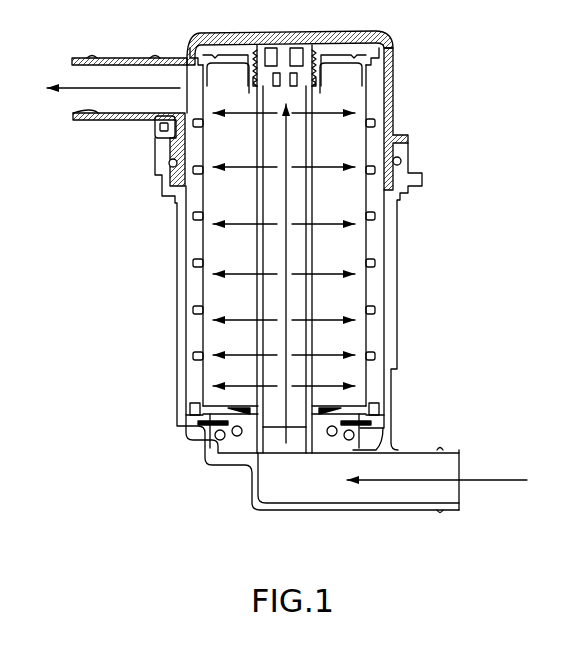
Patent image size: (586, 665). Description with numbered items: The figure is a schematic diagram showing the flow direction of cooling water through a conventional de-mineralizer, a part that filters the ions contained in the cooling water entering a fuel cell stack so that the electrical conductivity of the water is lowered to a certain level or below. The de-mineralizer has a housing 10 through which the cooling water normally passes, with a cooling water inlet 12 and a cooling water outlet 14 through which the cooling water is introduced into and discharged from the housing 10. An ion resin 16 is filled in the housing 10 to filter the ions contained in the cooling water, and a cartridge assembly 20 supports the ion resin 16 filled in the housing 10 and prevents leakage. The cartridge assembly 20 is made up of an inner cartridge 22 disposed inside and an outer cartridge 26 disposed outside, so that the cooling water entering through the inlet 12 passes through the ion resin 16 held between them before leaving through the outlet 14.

The housing 10 is at (389, 345).
The cooling water inlet 12 is at (461, 458).
The cooling water outlet 14 is at (75, 113).
The ion resin 16 is at (275, 307).
The cartridge assembly 20 is at (349, 249).
The inner cartridge 22 is at (312, 288).
The outer cartridge 26 is at (368, 235).